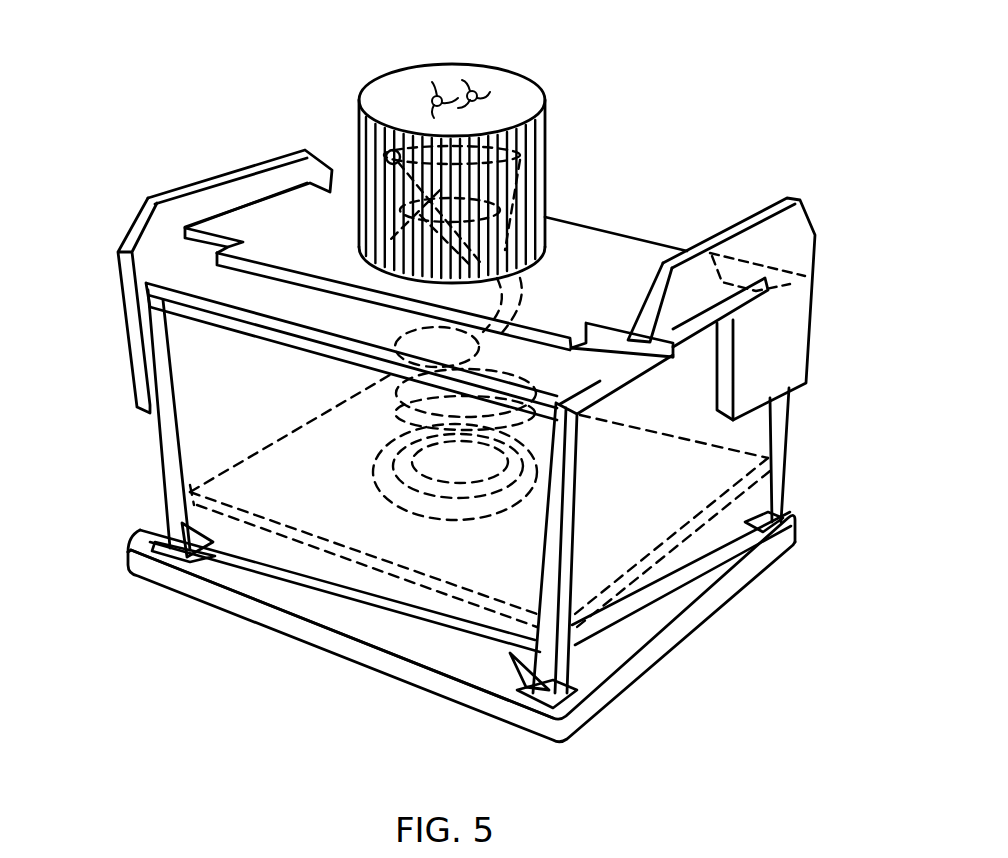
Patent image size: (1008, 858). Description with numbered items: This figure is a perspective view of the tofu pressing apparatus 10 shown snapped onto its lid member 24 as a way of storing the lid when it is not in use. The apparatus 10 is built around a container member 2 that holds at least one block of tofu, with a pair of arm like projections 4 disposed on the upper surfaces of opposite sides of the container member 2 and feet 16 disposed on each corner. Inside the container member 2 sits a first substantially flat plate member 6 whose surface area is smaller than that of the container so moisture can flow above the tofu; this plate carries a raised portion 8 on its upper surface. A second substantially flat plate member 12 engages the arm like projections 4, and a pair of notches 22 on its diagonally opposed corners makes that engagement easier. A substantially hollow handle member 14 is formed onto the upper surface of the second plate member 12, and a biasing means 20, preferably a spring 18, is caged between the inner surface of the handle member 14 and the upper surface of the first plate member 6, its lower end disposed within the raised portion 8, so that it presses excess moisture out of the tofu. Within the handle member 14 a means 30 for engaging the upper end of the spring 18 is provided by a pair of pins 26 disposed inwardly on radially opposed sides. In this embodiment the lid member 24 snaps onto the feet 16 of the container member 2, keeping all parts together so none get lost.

The apparatus 10 is at (624, 66).
The means for engaging an upper end of the spring 30 is at (344, 56).
The handle member 14 is at (548, 167).
The pins 26 is at (386, 157).
The second substantially flat plate member 12 is at (634, 232).
The notches 22 is at (198, 243).
The arm like projections 4 is at (147, 197).
The container member 2 is at (168, 462).
The first substantially flat plate member 6 is at (657, 518).
The raised portion 8 is at (488, 520).
The spring 18 is at (528, 300).
The biasing means 20 is at (293, 604).
The lid member 24 is at (400, 632).
The feet 16 is at (578, 687).